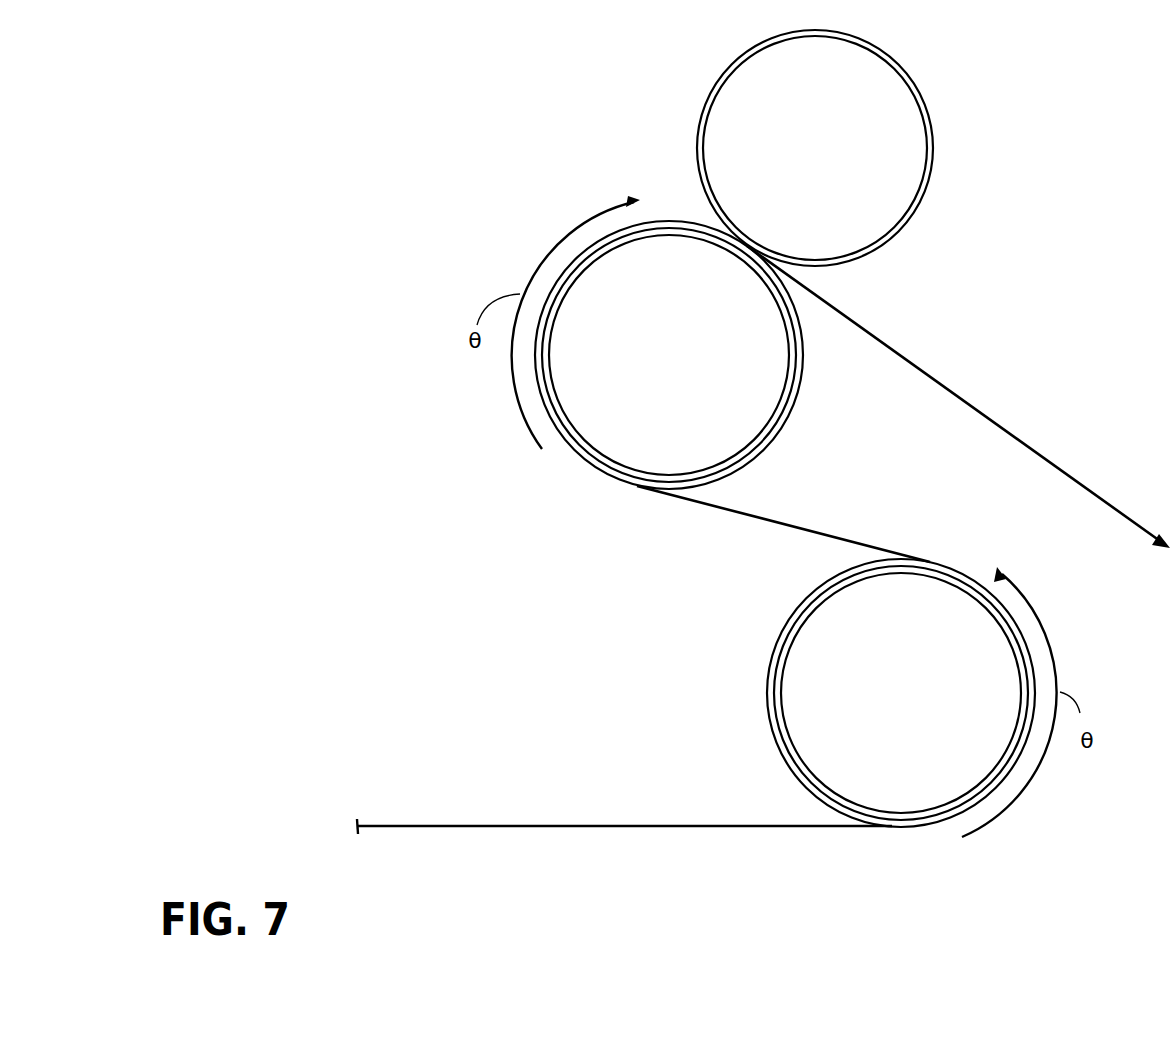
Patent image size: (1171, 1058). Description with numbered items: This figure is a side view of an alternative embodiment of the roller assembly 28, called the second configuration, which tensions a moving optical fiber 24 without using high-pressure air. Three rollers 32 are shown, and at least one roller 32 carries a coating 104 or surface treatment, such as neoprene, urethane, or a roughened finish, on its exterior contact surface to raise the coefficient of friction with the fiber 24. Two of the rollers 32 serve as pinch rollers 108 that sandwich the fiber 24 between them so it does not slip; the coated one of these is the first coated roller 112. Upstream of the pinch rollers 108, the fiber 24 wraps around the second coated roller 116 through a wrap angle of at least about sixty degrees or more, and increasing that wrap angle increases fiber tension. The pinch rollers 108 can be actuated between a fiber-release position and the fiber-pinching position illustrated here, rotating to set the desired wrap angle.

The optical fiber 24 is at (1075, 475).
The roller assembly 28 is at (480, 174).
The roller 32 is at (737, 90).
The coating 104 is at (777, 430).
The pinch rollers 108 is at (678, 267).
The first coated roller 112 is at (640, 450).
The second coated roller 116 is at (822, 740).